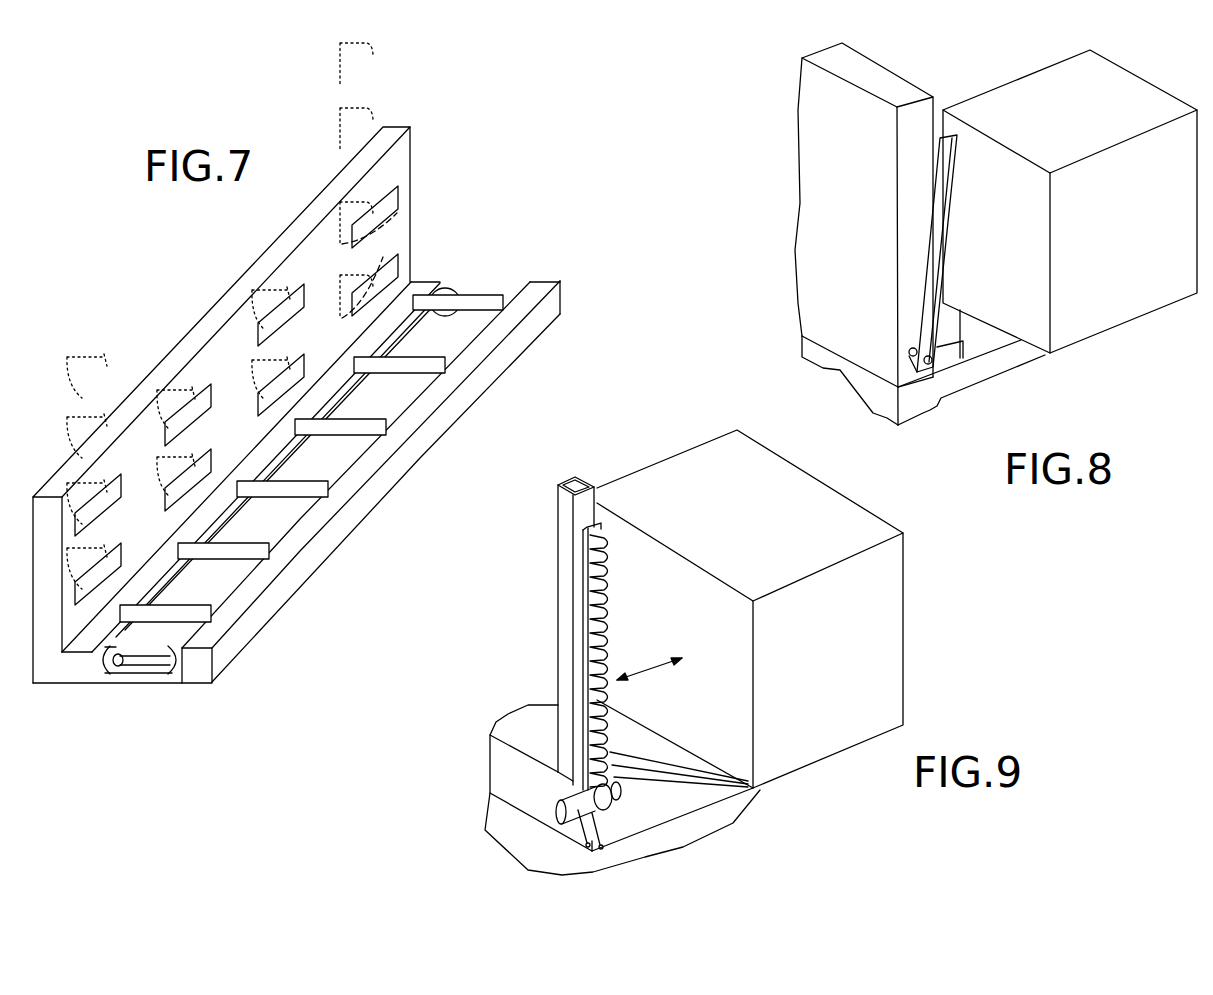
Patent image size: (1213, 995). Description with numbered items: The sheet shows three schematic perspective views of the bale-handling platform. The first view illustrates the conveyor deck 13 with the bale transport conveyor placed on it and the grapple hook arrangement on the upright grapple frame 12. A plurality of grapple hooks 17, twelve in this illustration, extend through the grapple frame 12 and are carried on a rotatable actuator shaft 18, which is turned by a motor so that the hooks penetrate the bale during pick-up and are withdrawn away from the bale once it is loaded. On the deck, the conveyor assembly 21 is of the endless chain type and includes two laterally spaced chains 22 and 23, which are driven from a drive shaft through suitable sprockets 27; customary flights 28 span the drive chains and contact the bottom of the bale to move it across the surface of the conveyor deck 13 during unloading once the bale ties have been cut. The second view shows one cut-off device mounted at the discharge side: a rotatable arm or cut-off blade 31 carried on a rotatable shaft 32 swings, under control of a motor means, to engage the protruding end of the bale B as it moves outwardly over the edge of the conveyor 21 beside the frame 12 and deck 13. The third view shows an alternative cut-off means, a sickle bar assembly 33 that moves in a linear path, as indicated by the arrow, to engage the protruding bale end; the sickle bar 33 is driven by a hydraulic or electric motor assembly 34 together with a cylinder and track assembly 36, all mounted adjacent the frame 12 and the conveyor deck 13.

In FIG. 7, the grapple frame 12 is at (45, 517).
In FIG. 8, the grapple frame 12 is at (887, 80).
In FIG. 9, the grapple frame 12 is at (565, 573).
In FIG. 7, the conveyor deck 13 is at (367, 500).
In FIG. 8, the conveyor deck 13 is at (987, 338).
In FIG. 9, the conveyor deck 13 is at (502, 770).
In FIG. 7, the grapple hooks 17 is at (83, 542).
In FIG. 7, the actuator shaft 18 is at (340, 218).
In FIG. 7, the conveyor assembly 21 is at (482, 288).
In FIG. 7, the chain 22 is at (304, 463).
In FIG. 7, the chain 23 is at (136, 645).
In FIG. 7, the sprockets 27 is at (93, 660).
In FIG. 7, the flights 28 is at (440, 370).
In FIG. 8, the cut-off blade 31 is at (937, 287).
In FIG. 8, the rotatable shaft 32 is at (905, 357).
In FIG. 9, the sickle bar assembly 33 is at (585, 647).
In FIG. 9, the motor assembly 34 is at (532, 842).
In FIG. 9, the cylinder and track assembly 36 is at (663, 793).
In FIG. 8, the bale B is at (1115, 85).